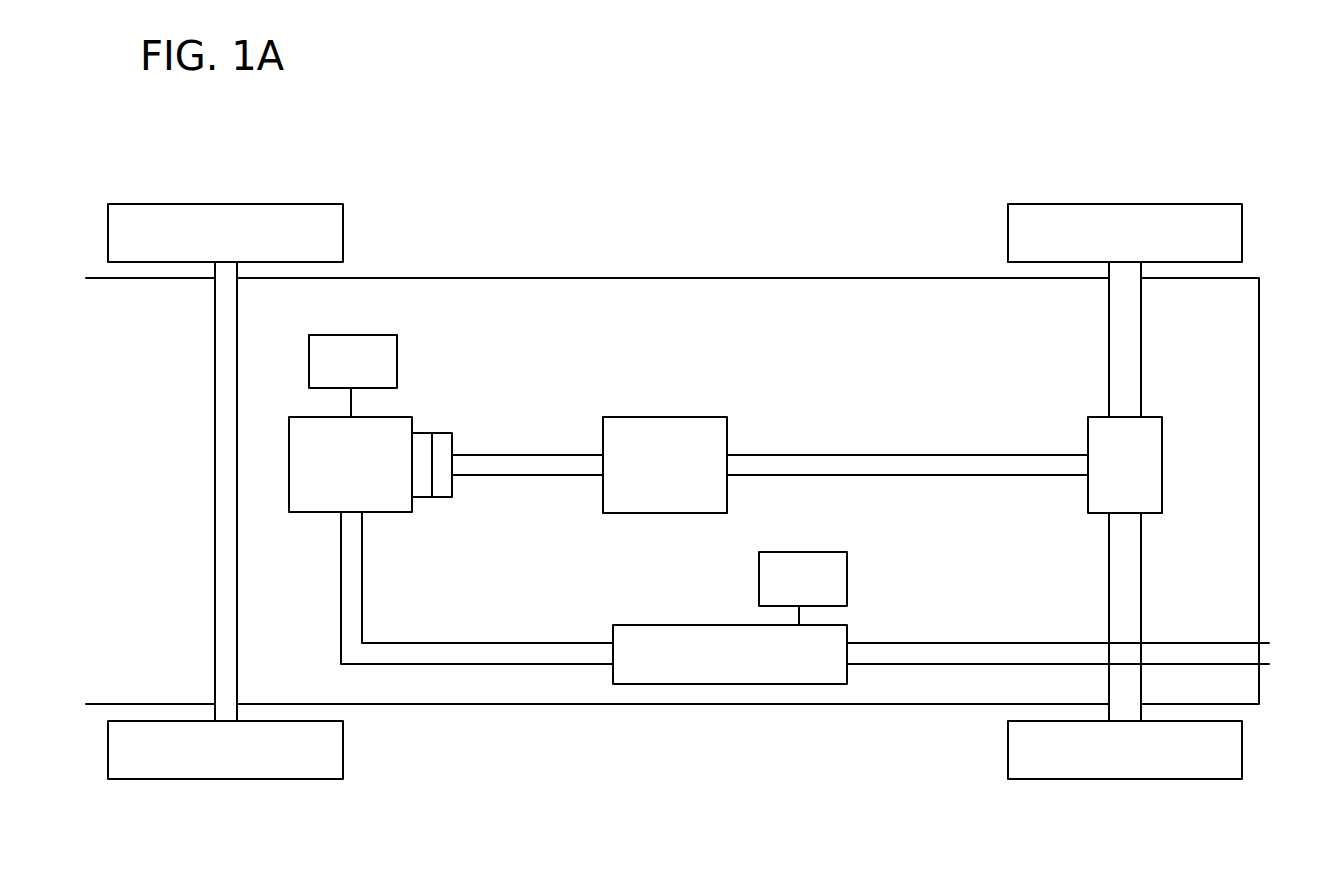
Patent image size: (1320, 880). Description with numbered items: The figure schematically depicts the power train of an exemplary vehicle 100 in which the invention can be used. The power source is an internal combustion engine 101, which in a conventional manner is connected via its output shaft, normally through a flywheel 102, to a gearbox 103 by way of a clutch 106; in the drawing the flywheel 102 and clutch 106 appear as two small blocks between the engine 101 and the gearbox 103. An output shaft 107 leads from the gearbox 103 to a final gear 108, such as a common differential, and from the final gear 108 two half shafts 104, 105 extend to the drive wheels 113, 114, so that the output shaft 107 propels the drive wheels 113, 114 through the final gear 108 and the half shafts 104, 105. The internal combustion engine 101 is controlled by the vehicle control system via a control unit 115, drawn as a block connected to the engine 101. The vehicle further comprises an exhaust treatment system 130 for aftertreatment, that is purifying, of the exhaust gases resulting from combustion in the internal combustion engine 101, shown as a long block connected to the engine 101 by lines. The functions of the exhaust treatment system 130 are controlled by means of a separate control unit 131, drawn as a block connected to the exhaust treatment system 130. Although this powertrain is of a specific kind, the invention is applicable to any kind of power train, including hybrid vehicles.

The vehicle 100 is at (590, 104).
The internal combustion engine 101 is at (322, 502).
The flywheel 102 is at (428, 497).
The gearbox 103 is at (668, 427).
The half shaft 104 is at (1130, 339).
The half shaft 105 is at (1135, 626).
The clutch 106 is at (443, 490).
The output shaft 107 is at (1003, 470).
The final gear 108 is at (1158, 460).
The drive wheel 113 is at (1240, 224).
The drive wheel 114 is at (1238, 752).
The control unit 115 is at (352, 371).
The exhaust treatment system 130 is at (716, 637).
The control unit 131 is at (802, 589).